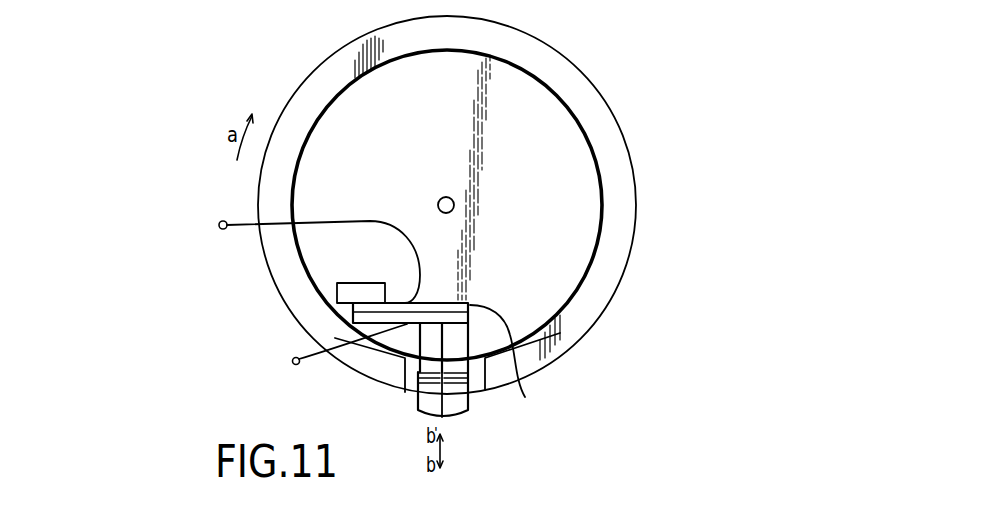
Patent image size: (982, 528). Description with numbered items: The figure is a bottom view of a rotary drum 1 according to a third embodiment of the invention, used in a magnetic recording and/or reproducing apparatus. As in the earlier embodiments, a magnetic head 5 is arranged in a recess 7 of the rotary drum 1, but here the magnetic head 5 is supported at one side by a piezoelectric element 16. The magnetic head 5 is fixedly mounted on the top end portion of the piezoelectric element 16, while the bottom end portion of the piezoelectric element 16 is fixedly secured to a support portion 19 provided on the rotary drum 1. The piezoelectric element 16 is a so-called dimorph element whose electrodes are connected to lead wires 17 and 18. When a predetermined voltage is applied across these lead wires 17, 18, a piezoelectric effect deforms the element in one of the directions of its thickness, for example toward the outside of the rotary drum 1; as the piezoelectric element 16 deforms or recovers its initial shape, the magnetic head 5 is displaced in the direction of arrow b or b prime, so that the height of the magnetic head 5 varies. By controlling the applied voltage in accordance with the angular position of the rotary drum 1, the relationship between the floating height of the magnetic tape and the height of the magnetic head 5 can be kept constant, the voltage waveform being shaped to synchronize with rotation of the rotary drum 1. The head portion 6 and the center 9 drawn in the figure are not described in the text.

The rotary drum 1 is at (295, 318).
The magnetic head 5 is at (455, 425).
The head chip 6 is at (450, 412).
The recess 7 is at (410, 396).
The rotation center shaft 9 is at (453, 201).
The piezoelectric element 16 is at (573, 404).
The lead wire 17 is at (242, 220).
The lead wire 18 is at (299, 365).
The support portion 19 is at (350, 285).